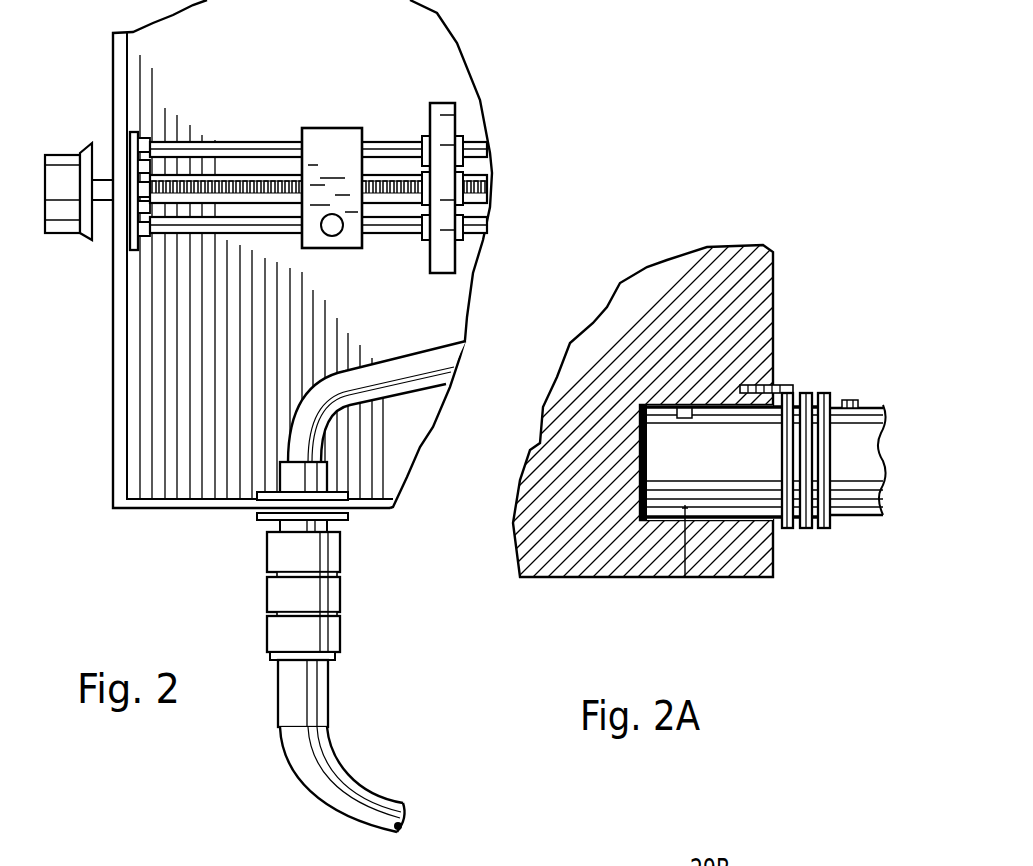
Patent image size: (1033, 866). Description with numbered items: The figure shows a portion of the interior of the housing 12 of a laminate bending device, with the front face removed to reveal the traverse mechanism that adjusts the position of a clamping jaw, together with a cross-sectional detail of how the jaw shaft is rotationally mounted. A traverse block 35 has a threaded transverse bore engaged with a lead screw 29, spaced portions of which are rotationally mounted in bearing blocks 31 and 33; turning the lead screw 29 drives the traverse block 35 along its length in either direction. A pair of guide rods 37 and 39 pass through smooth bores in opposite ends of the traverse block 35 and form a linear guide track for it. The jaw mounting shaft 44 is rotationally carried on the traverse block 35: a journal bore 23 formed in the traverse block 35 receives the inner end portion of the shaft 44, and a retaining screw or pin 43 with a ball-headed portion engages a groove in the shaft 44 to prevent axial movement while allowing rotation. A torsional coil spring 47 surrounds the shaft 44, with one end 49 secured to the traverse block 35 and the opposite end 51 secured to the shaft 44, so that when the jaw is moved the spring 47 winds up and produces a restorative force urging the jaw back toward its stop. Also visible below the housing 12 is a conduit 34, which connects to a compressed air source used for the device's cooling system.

In FIG. 2, the housing 12 is at (113, 427).
In FIG. 2A, the journal bore 23 is at (747, 527).
In FIG. 2, the lead screw 29 is at (245, 170).
In FIG. 2, the bearing block 31 is at (135, 130).
In FIG. 2, the bearing block 33 is at (452, 254).
In FIG. 2, the conduit 34 is at (267, 636).
In FIG. 2, the traverse block 35 is at (340, 133).
In FIG. 2A, the traverse block 35 is at (693, 253).
In FIG. 2, the guide rod 37 is at (392, 140).
In FIG. 2, the guide rod 39 is at (397, 232).
In FIG. 2A, the retaining screw or pin 43 is at (687, 563).
In FIG. 2, the jaw mounting shaft 44 is at (328, 236).
In FIG. 2A, the jaw mounting shaft 44 is at (863, 517).
In FIG. 2A, the torsional coil spring 47 is at (807, 528).
In FIG. 2A, the spring end 49 is at (777, 388).
In FIG. 2A, the spring end 51 is at (850, 398).